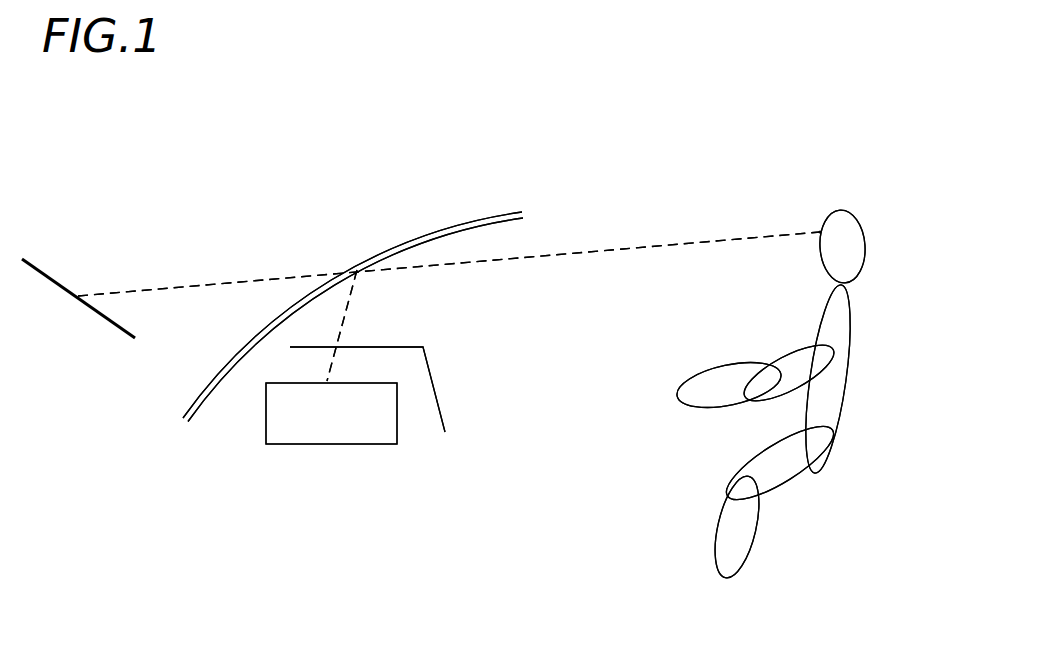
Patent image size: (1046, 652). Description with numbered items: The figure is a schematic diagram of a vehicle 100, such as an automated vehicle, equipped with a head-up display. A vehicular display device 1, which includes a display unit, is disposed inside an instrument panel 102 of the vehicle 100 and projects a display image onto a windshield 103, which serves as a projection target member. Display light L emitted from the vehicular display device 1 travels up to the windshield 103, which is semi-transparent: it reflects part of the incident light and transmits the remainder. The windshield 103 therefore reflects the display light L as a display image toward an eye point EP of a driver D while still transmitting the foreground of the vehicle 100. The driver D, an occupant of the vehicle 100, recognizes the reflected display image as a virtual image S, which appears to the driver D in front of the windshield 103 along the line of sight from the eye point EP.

The vehicle 100 is at (241, 122).
The windshield 103 is at (452, 230).
The instrument panel 102 is at (435, 385).
The vehicular display device 1 is at (312, 458).
The virtual image S is at (50, 273).
The display light L is at (352, 300).
The eye point EP is at (820, 232).
The driver D is at (857, 212).